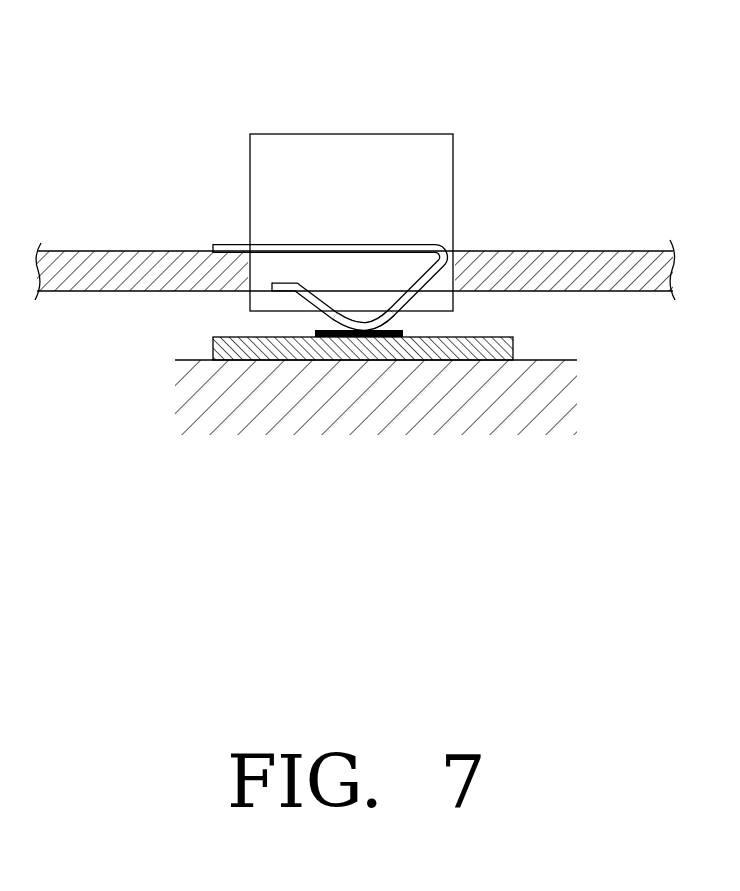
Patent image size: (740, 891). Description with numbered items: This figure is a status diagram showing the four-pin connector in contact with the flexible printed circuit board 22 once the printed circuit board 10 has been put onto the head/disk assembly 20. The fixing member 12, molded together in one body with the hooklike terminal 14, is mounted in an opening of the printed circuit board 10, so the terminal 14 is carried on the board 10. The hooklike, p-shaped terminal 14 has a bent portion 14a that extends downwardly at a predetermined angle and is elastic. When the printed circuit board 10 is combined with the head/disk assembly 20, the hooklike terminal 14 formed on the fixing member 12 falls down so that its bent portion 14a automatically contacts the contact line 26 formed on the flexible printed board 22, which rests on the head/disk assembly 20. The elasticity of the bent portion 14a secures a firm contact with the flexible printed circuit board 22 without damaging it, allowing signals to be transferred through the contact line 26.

The printed circuit board 10 is at (108, 262).
The fixing member 12 is at (349, 147).
The hooklike terminal 14 is at (227, 245).
The bent portion 14a is at (362, 330).
The head/disk assembly 20 is at (530, 413).
The flexible printed circuit board 22 is at (252, 338).
The contact line 26 is at (428, 338).